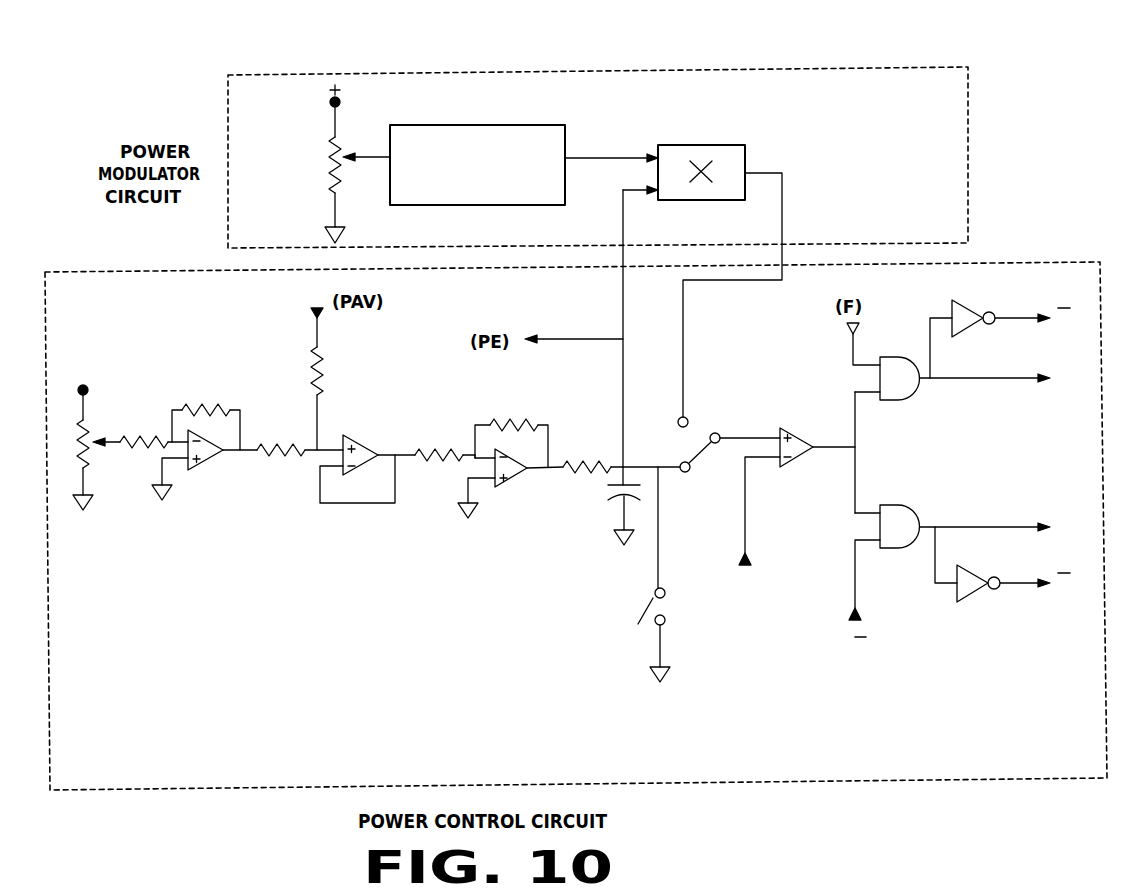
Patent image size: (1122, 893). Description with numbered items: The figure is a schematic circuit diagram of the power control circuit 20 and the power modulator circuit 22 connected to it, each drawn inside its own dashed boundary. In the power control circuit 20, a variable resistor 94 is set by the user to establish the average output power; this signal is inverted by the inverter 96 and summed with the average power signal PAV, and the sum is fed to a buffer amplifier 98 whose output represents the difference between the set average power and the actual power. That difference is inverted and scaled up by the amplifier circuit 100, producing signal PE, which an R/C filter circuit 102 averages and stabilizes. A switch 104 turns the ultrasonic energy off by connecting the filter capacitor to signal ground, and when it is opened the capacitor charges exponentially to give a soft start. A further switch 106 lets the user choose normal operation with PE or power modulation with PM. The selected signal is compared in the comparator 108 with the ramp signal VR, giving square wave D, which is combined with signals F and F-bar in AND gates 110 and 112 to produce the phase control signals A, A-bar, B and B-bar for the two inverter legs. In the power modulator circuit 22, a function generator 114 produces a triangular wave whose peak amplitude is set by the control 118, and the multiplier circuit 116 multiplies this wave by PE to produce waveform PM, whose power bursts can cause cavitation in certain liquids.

The power control circuit 20 is at (811, 790).
The power modulator circuit 22 is at (914, 60).
The variable resistor 94 is at (88, 425).
The inverter 96 is at (207, 463).
The buffer amplifier 98 is at (364, 443).
The amplifier circuit 100 is at (505, 482).
The R/C filter circuit 102 is at (587, 473).
The switch 104 is at (649, 604).
The further switch 106 is at (695, 458).
The comparator 108 is at (792, 463).
The AND gate 110 is at (897, 394).
The AND gate 112 is at (900, 512).
The function generator 114 is at (508, 125).
The multiplier circuit 116 is at (746, 158).
The control 118 is at (335, 146).